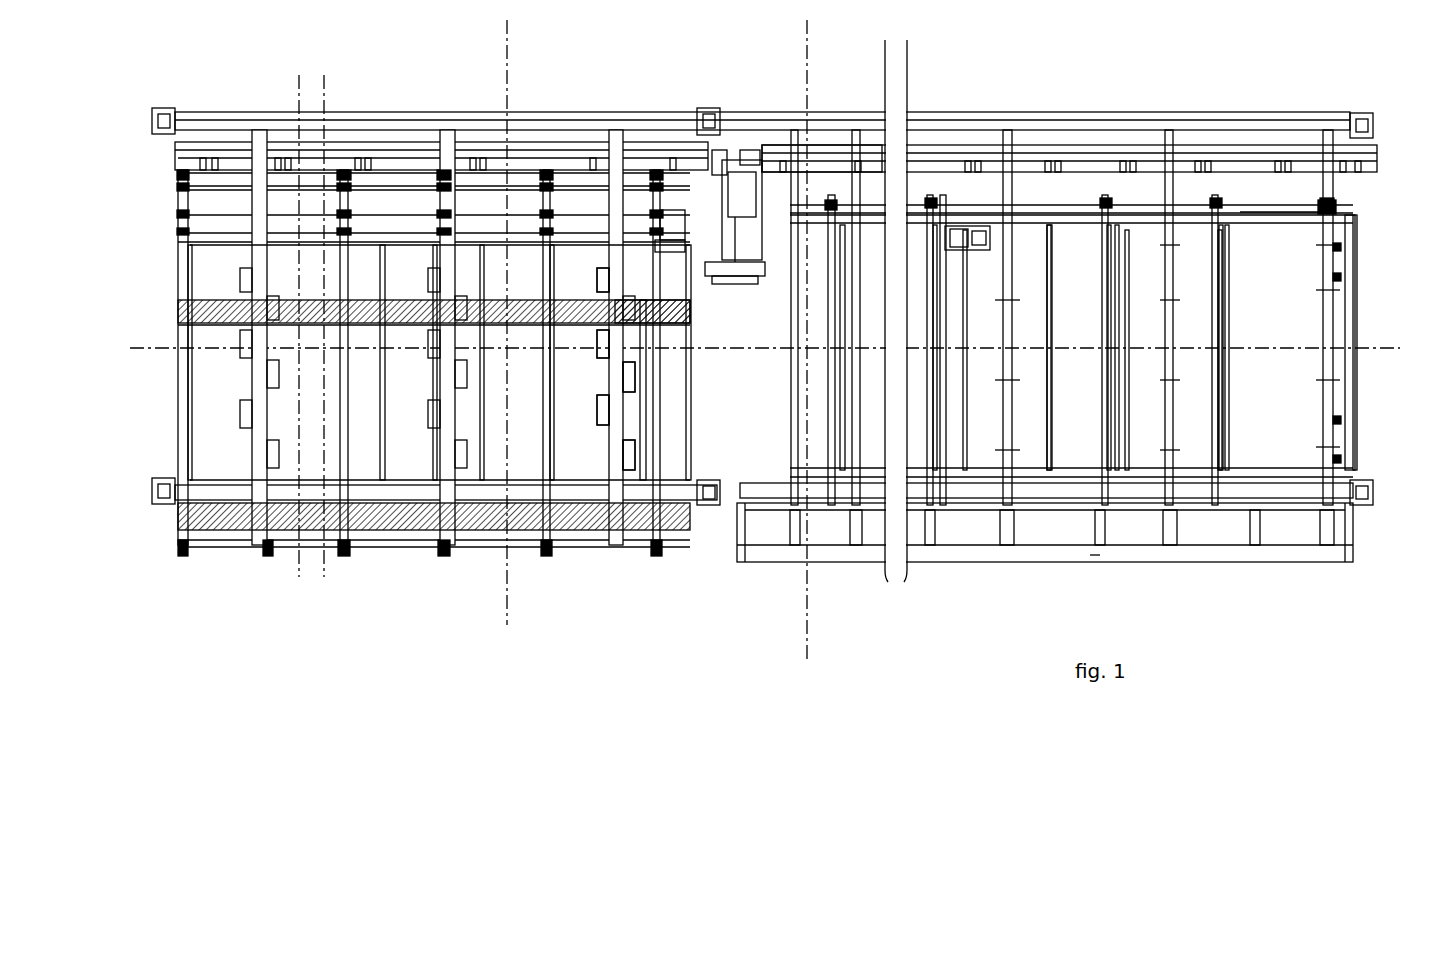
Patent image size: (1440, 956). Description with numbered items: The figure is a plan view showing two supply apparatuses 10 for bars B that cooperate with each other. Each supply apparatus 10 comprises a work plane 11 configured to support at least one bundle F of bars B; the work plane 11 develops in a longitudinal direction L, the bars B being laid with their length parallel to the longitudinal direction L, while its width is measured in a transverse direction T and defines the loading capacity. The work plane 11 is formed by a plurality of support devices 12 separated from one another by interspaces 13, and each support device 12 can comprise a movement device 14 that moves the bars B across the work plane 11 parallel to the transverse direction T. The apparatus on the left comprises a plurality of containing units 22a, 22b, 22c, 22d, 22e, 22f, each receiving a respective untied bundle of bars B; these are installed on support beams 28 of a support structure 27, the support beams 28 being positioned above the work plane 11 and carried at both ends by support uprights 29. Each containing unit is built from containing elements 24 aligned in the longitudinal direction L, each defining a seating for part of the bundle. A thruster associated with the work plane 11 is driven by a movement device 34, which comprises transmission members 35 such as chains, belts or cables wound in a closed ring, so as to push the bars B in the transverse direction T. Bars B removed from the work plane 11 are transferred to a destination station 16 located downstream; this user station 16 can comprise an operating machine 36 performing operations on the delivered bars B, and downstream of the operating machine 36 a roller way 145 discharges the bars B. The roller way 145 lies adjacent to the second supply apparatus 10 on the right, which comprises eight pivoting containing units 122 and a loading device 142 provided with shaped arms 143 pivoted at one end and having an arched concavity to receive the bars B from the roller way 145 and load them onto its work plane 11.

The supply apparatus 10 is at (343, 600).
The work plane 11 is at (172, 428).
The support device 12 is at (178, 280).
The interspace 13 is at (185, 440).
The movement device 14 is at (930, 425).
The destination station 16 is at (175, 150).
The containing unit 22a is at (638, 455).
The containing unit 22b is at (612, 428).
The containing unit 22c is at (638, 382).
The containing unit 22d is at (612, 355).
The containing unit 22e is at (622, 330).
The containing unit 22f is at (612, 300).
The containing element 24 is at (273, 297).
The support structure 27 is at (1258, 125).
The support beam 28 is at (259, 142).
The support upright 29 is at (163, 120).
The movement device 34 is at (178, 335).
The transmission member 35 is at (182, 397).
The operating machine 36 is at (741, 146).
The containing unit 122 is at (1342, 277).
The loading device 142 is at (1338, 206).
The shaped arm 143 is at (1316, 212).
The roller way 145 is at (825, 146).
The bar B is at (210, 300).
The bundle F is at (178, 302).
The longitudinal direction L is at (135, 350).
The transverse direction T is at (512, 48).